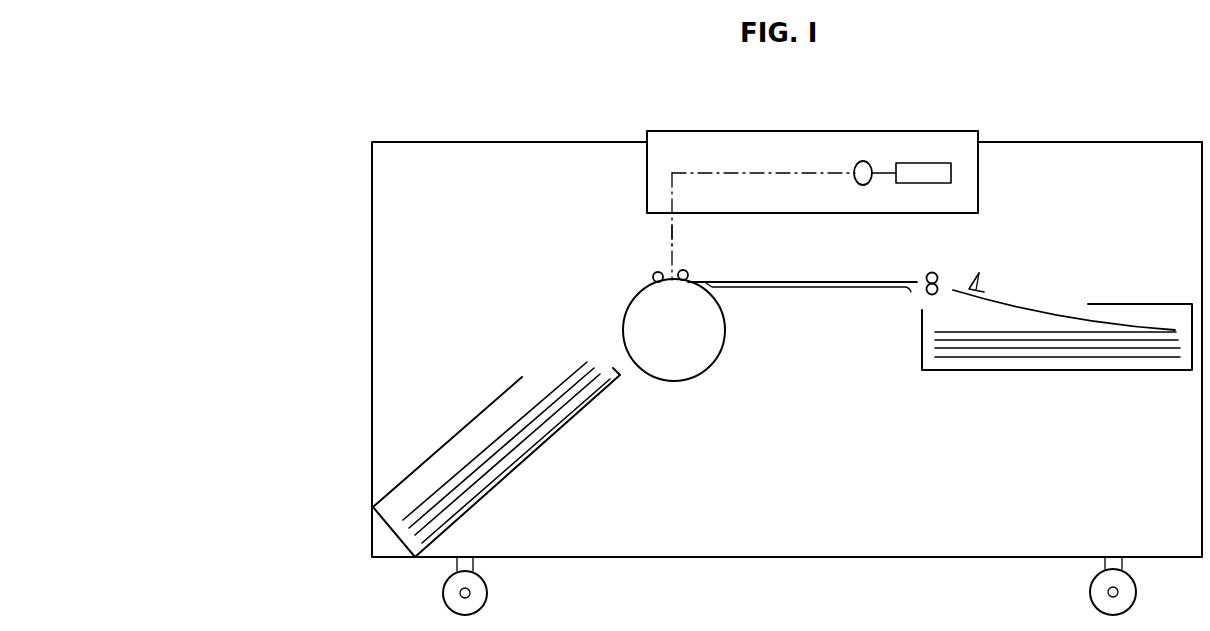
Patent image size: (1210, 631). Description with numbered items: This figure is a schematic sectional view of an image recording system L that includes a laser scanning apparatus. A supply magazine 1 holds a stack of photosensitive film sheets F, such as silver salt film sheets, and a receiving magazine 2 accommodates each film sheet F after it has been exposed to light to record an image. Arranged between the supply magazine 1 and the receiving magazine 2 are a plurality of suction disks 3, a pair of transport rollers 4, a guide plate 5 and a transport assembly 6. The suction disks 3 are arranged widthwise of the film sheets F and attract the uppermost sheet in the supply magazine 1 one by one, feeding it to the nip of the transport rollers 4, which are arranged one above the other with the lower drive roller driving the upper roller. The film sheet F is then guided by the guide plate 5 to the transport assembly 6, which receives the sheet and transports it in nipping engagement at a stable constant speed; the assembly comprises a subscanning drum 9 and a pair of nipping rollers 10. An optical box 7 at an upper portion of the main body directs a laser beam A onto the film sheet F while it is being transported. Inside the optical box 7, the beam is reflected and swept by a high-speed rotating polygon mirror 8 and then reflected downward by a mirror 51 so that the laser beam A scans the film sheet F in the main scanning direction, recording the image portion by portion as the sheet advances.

The image recording system L is at (518, 118).
The supply magazine 1 is at (1077, 372).
The receiving magazine 2 is at (512, 473).
The suction disks 3 is at (980, 280).
The transport rollers 4 is at (934, 272).
The guide plate 5 is at (807, 290).
The transport assembly 6 is at (714, 265).
The optical box 7 is at (892, 135).
The polygon mirror 8 is at (923, 166).
The subscanning drum 9 is at (690, 358).
The nipping rollers 10 is at (653, 275).
The mirror 51 is at (667, 176).
The laser beam A is at (666, 235).
The film sheets F is at (784, 283).